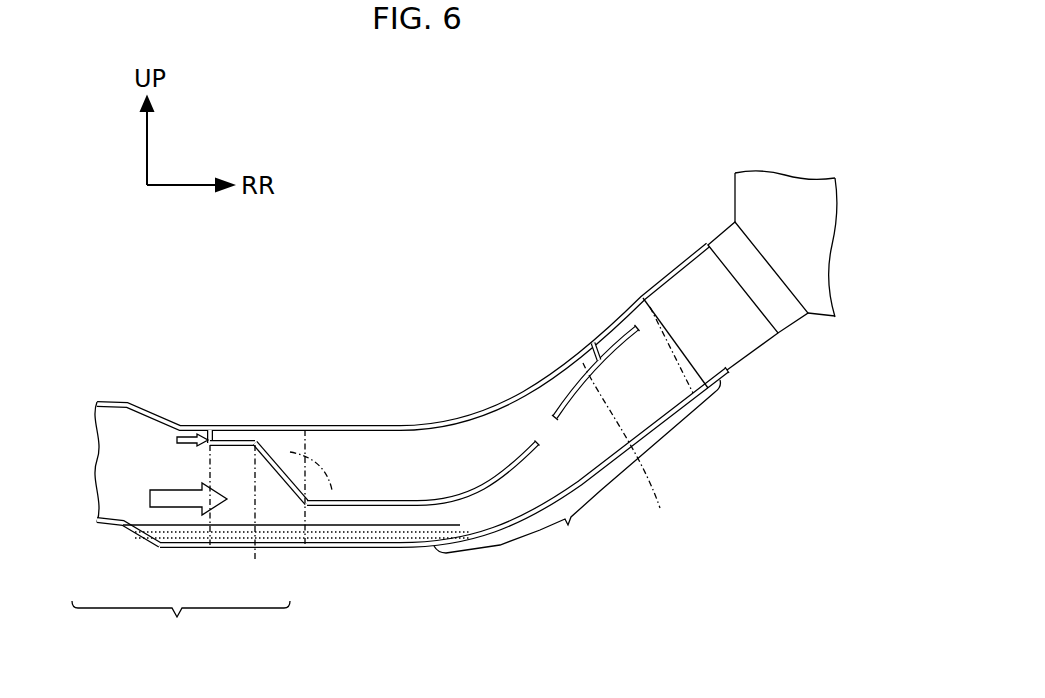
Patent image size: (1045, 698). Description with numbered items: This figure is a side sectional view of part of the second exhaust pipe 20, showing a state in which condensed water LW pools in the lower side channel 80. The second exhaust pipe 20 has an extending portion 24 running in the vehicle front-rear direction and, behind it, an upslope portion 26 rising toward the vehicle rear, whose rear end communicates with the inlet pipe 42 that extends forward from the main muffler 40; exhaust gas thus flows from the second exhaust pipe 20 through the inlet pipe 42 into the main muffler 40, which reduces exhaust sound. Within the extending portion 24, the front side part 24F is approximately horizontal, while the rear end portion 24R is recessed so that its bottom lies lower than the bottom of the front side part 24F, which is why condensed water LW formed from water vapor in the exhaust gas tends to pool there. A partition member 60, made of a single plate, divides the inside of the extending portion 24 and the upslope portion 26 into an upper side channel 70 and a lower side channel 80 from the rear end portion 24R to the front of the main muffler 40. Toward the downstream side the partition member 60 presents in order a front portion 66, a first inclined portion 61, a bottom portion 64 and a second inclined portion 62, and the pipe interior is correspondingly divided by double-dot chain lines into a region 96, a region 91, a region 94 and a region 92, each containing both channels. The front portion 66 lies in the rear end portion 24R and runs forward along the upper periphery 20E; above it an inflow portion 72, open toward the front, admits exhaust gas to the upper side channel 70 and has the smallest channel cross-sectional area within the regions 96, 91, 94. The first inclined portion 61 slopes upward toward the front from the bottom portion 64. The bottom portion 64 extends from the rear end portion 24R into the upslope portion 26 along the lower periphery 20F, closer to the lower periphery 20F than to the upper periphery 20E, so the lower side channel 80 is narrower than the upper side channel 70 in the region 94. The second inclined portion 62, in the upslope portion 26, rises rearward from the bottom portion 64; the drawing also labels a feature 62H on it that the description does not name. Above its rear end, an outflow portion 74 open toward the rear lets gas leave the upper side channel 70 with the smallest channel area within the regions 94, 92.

The second exhaust pipe 20 is at (130, 405).
The upper periphery 20E is at (327, 427).
The lower periphery 20F is at (368, 553).
The inflow portion 72 is at (197, 426).
The front portion 66 is at (223, 440).
The first inclined portion 61 is at (283, 465).
The upper side channel 70 is at (395, 460).
The bottom portion 64 is at (448, 497).
The second inclined portion 62 is at (562, 385).
The hem end of flange plate 62H is at (552, 421).
The partition member 60 is at (597, 345).
The outflow portion 74 is at (641, 297).
The inlet pipe 42 is at (695, 282).
The main muffler 40 is at (733, 195).
The region 96 is at (225, 477).
The condensed water LW is at (147, 523).
The front side part 24F is at (130, 554).
The rear end portion 24R is at (406, 553).
The extending portion 24 is at (181, 624).
The region 91 is at (325, 520).
The region 94 is at (421, 520).
The lower side channel 80 is at (495, 400).
The upslope portion 26 is at (577, 470).
The region 92 is at (674, 543).